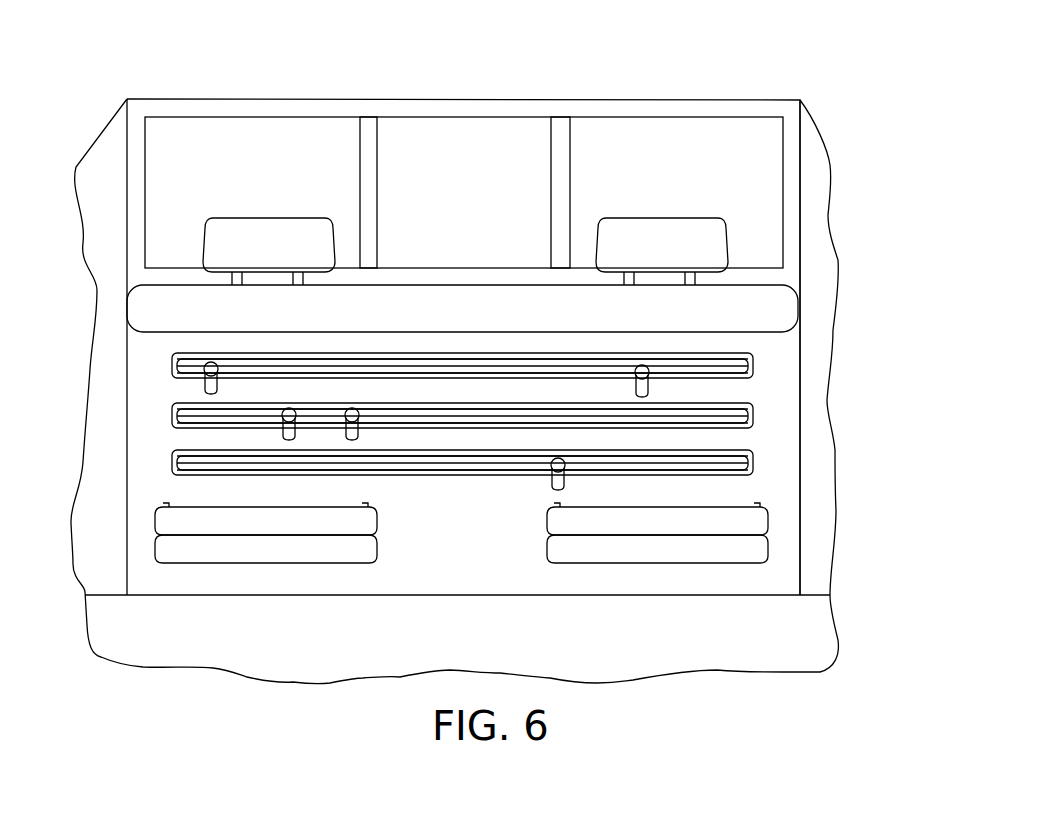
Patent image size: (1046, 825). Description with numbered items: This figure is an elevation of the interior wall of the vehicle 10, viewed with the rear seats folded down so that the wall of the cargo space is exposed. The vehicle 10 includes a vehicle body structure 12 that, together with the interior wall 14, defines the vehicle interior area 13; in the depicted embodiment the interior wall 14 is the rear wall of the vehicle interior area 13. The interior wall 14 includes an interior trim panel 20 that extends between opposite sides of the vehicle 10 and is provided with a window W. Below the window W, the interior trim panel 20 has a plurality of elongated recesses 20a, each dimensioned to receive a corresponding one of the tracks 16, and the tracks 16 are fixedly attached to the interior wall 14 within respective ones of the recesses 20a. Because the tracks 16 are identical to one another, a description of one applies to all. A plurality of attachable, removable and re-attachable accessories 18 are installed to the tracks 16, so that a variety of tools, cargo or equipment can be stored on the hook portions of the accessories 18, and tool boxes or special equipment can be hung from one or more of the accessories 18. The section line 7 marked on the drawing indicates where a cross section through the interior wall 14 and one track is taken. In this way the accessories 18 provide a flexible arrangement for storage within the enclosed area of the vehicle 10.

The vehicle 10 is at (655, 53).
The vehicle body structure 12 is at (106, 160).
The vehicle interior area 13 is at (285, 641).
The interior wall 14 is at (775, 378).
The tracks 16 is at (740, 377).
The accessory 18 is at (352, 440).
The interior trim panel 20 is at (375, 348).
The elongated recesses 20a is at (175, 368).
The window W is at (446, 150).
The section line 7- 7 is at (425, 248).